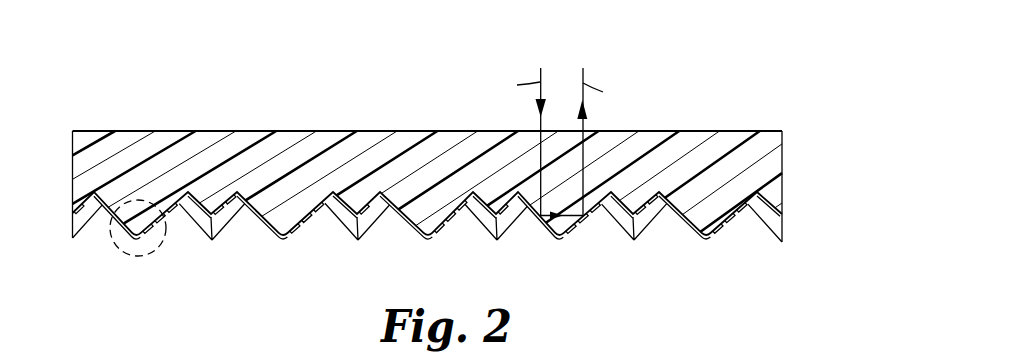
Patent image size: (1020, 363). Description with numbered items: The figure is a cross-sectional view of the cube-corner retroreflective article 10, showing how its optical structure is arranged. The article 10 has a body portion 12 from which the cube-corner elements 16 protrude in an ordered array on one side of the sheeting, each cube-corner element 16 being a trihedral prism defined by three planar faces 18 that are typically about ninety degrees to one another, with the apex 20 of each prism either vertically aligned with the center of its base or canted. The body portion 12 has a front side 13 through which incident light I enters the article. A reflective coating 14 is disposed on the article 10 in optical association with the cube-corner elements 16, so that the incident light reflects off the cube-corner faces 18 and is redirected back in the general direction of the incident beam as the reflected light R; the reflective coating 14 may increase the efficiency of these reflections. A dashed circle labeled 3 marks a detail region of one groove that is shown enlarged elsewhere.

The retroreflective article 10 is at (464, 159).
The body portion 12 is at (698, 150).
The front side 13 is at (418, 130).
The reflective coating 14 is at (763, 224).
The cube-corner elements 16 is at (287, 215).
The faces 18 is at (442, 224).
The apex 20 is at (558, 245).
The detail region shown in FIG. 3 is at (147, 255).